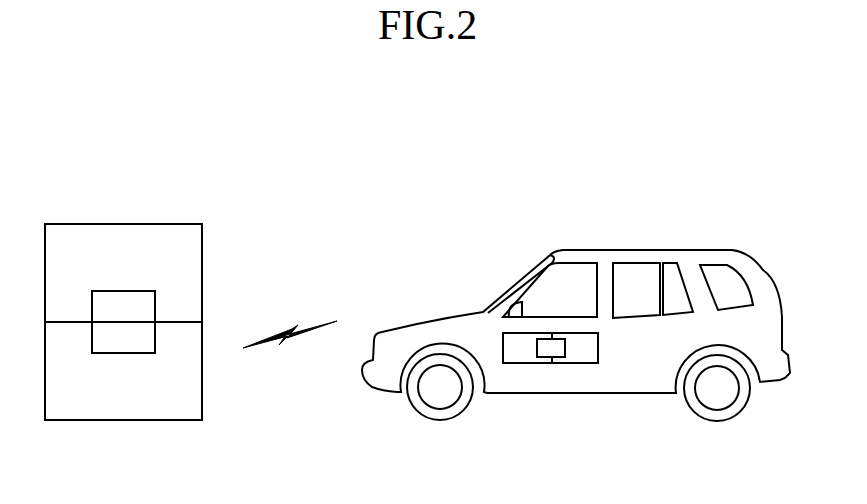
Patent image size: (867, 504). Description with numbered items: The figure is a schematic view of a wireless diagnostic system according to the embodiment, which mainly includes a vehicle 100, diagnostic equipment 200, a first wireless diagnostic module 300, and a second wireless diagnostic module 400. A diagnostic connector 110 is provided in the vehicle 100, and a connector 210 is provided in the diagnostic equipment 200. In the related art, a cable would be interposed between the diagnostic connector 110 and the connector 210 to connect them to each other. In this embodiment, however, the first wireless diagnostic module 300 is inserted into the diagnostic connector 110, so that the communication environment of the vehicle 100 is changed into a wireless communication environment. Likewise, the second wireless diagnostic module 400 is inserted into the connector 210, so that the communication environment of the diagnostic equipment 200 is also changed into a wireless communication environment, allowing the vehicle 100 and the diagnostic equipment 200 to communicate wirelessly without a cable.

The vehicle 100 is at (639, 253).
The diagnostic connector 110 is at (585, 355).
The diagnostic equipment 200 is at (157, 240).
The connector 210 is at (123, 335).
The first wireless diagnostic module 300 is at (518, 355).
The second wireless diagnostic module 400 is at (177, 403).